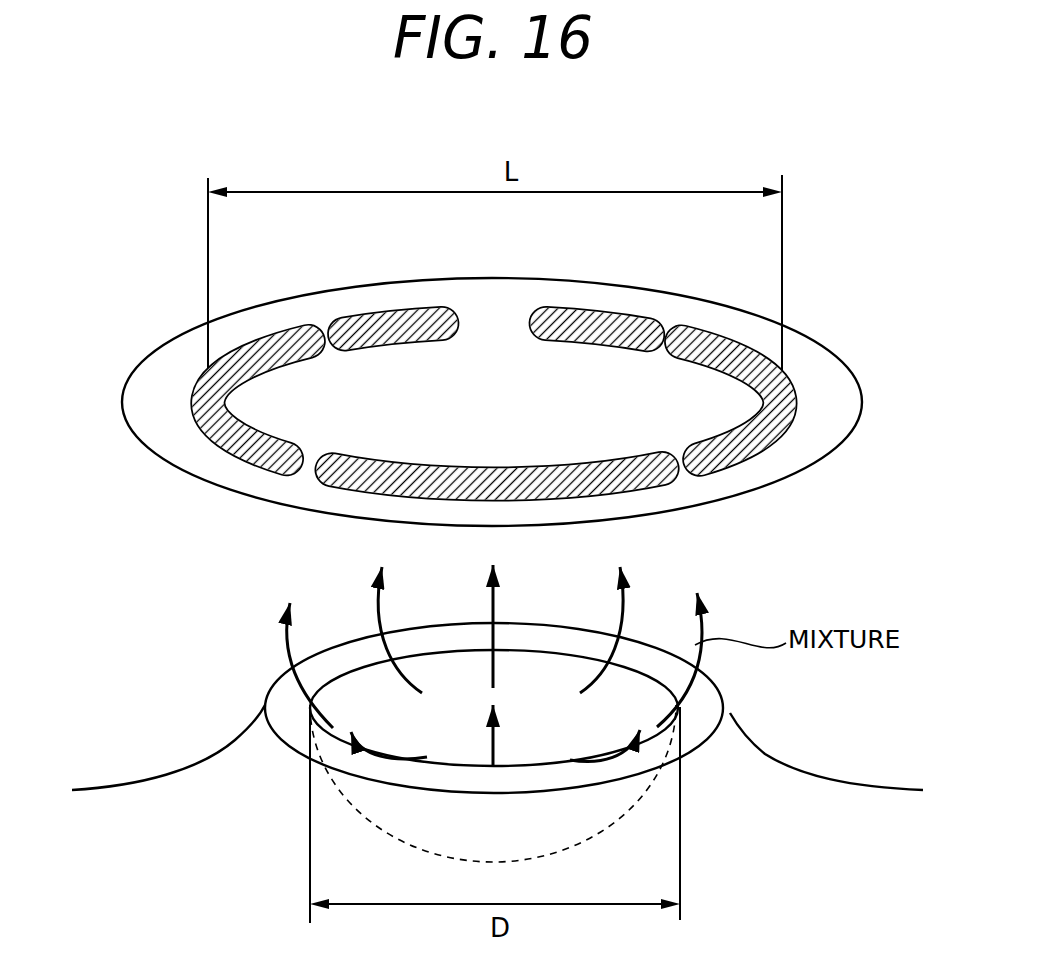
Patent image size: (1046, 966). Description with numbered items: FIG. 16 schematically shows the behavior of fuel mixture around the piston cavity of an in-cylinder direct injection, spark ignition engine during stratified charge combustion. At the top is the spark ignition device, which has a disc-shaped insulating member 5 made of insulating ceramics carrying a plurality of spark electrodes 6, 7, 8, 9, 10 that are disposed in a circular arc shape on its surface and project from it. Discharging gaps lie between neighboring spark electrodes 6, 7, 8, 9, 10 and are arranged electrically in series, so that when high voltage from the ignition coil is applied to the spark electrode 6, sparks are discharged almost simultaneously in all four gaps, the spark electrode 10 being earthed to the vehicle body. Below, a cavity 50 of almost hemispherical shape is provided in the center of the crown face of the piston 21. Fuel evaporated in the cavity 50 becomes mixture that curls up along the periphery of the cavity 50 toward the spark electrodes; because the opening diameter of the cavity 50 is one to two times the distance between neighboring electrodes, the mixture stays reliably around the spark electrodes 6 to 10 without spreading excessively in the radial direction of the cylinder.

The insulating member 5 is at (845, 376).
The spark electrode 6 is at (403, 326).
The spark electrode 7 is at (192, 402).
The spark electrode 8 is at (323, 490).
The spark electrode 9 is at (747, 457).
The spark electrode 10 is at (600, 323).
The piston 21 is at (815, 770).
The cavity 50 is at (372, 820).